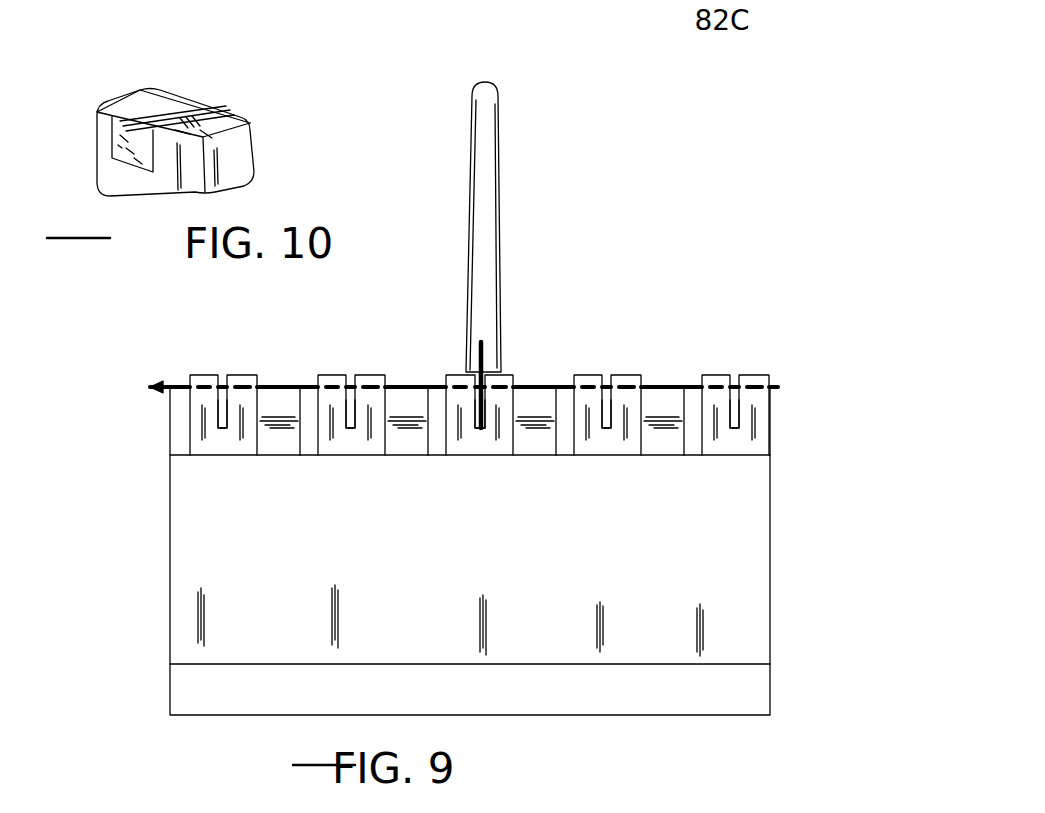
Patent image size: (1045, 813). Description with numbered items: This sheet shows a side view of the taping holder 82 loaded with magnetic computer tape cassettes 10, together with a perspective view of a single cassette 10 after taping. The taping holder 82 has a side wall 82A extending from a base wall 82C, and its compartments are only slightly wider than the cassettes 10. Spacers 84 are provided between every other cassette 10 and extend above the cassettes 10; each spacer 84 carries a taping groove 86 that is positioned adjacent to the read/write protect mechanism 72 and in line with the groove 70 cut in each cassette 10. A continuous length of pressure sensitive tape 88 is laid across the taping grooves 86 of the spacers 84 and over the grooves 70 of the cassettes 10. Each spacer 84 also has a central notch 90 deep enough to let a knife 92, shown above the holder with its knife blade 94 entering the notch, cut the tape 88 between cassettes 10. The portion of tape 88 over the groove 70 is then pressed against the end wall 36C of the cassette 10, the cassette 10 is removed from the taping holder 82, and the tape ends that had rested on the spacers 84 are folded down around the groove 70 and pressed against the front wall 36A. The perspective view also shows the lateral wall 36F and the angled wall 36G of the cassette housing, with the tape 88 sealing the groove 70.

In FIG. 9, the magnetic computer tape cassette 10 is at (283, 400).
In FIG. 10, the front wall 36A is at (118, 177).
In FIG. 10, the end wall 36C is at (123, 100).
In FIG. 9, the end wall 36C is at (276, 458).
In FIG. 10, the lateral wall 36F is at (243, 145).
In FIG. 10, the angled wall 36G is at (202, 176).
In FIG. 9, the angled wall 36G is at (178, 443).
In FIG. 10, the groove 70 is at (187, 110).
In FIG. 10, the read/write protect mechanism 72 is at (215, 116).
In FIG. 9, the taping holder 82 is at (785, 566).
In FIG. 9, the side wall 82A is at (725, 594).
In FIG. 9, the base wall 82C is at (745, 690).
In FIG. 9, the spacer 84 is at (238, 372).
In FIG. 9, the taping groove 86 is at (752, 373).
In FIG. 10, the pressure sensitive tape 88 is at (125, 135).
In FIG. 9, the pressure sensitive tape 88 is at (782, 386).
In FIG. 9, the central notch 90 is at (222, 432).
In FIG. 9, the knife 92 is at (488, 166).
In FIG. 9, the knife blade 94 is at (490, 410).